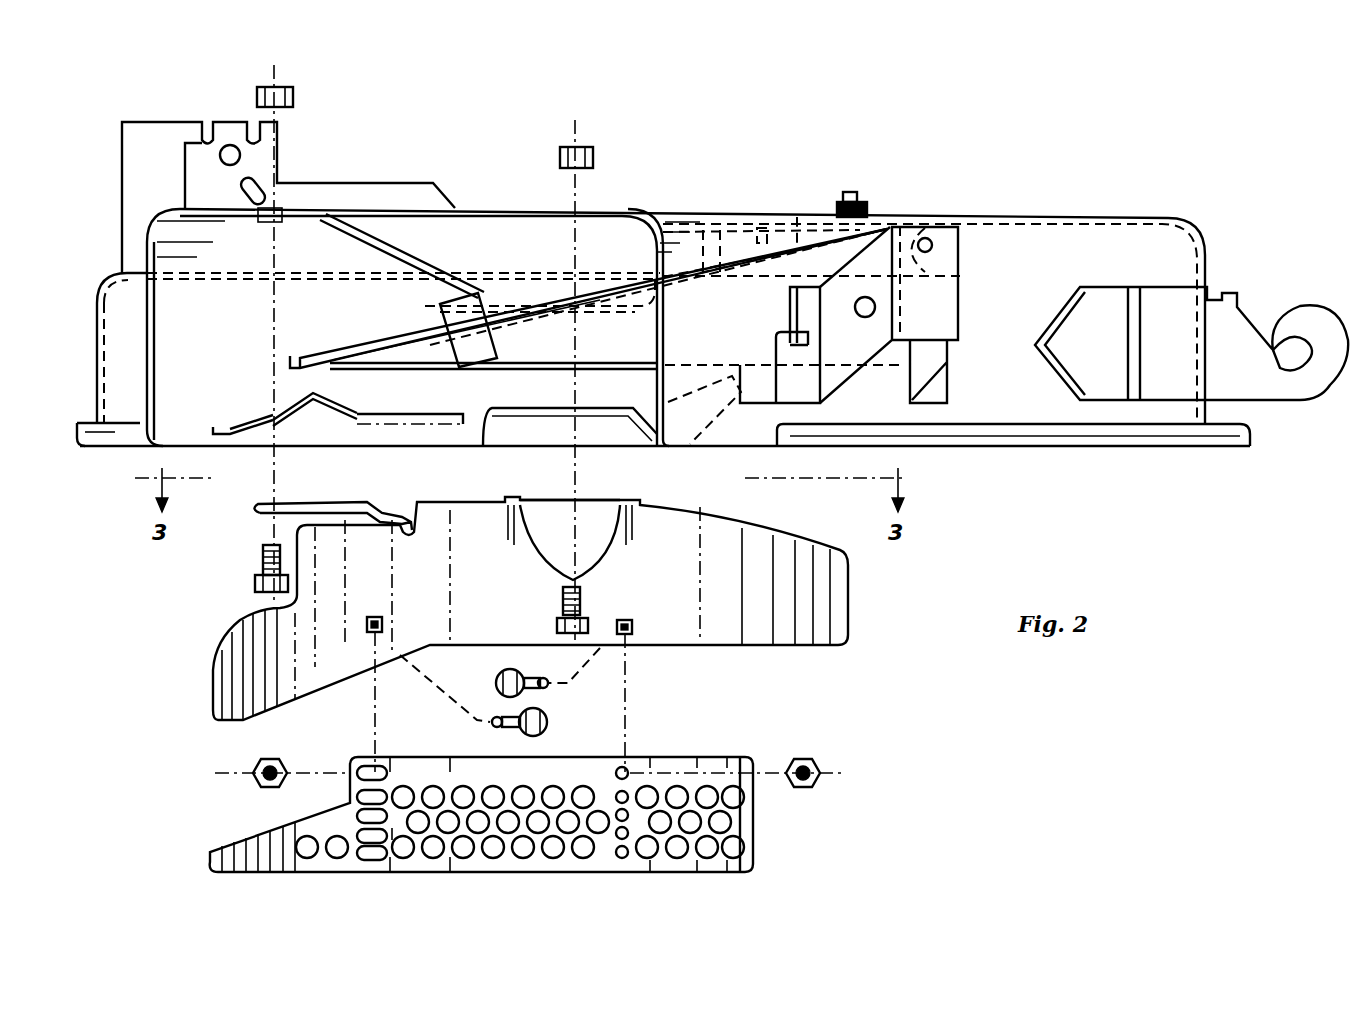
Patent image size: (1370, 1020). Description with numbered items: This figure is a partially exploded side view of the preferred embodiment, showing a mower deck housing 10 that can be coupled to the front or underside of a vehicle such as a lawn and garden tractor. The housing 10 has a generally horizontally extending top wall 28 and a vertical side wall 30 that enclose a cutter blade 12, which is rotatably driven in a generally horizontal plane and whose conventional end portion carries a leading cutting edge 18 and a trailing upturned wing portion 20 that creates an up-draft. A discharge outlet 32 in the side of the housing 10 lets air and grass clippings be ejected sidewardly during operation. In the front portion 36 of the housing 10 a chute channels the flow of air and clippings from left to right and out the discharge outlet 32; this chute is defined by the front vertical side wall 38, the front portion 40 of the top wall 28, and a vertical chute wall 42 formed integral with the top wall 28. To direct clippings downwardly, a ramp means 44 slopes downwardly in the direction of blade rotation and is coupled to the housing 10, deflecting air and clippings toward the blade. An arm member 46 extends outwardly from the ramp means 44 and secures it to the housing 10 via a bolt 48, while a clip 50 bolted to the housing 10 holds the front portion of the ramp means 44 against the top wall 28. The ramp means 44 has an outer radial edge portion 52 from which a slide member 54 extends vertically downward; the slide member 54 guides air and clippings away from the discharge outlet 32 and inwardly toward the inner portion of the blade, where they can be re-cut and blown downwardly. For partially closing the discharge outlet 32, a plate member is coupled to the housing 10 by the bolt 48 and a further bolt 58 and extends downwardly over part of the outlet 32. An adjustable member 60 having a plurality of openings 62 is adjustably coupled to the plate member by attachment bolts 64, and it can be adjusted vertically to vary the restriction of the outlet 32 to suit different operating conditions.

The mower deck housing 10 is at (1045, 452).
The cutter blade 12 is at (420, 410).
The leading cutting edge 18 is at (215, 430).
The trailing upturned wing portion 20 is at (292, 398).
The top wall 28 is at (1005, 216).
The vertical side wall 30 is at (1205, 357).
The discharge outlet 32 is at (98, 458).
The front portion 36 is at (1160, 215).
The front vertical side wall 38 is at (1206, 258).
The front portion of the top wall 40 is at (1064, 216).
The vertical chute wall 42 is at (927, 238).
The ramp means 44 is at (762, 240).
The arm member 46 is at (415, 262).
The bolt 48 is at (300, 552).
The clip 50 is at (880, 226).
The outer radial edge portion 52 is at (797, 250).
The slide member 54 is at (637, 370).
The bolt 58 is at (588, 622).
The adjustable member 60 is at (752, 842).
The openings 62 is at (553, 858).
The attachment bolts 64 is at (548, 724).